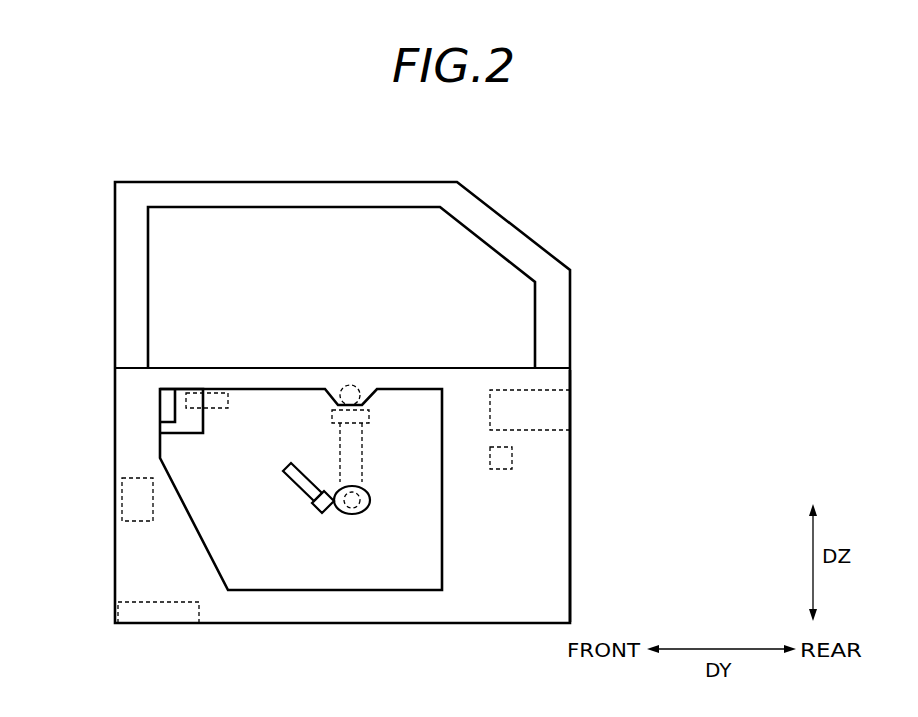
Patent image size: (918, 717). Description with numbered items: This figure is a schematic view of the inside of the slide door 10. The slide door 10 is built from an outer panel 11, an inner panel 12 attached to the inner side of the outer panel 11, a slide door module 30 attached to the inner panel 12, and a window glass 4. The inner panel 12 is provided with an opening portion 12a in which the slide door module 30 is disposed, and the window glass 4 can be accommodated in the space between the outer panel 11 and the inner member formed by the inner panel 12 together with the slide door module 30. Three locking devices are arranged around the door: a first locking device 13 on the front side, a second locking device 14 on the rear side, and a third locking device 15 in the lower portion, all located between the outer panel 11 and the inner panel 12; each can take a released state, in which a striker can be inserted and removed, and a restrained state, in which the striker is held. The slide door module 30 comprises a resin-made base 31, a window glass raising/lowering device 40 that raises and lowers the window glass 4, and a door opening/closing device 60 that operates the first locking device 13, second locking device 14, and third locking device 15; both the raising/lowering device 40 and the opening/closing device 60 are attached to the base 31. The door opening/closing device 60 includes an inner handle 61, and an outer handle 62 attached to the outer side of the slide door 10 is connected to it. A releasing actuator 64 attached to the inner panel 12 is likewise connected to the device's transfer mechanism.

The window glass 4 is at (467, 258).
The slide door 10 is at (690, 262).
The outer panel 11 is at (572, 331).
The inner panel 12 is at (558, 506).
The opening portion 12a is at (432, 566).
The first locking device 13 is at (122, 500).
The second locking device 14 is at (562, 404).
The third locking device 15 is at (158, 608).
The slide door module 30 is at (402, 388).
The base 31 is at (432, 531).
The window glass raising/lowering device 40 is at (365, 469).
The door opening/closing device 60 is at (150, 402).
The inner handle 61 is at (158, 415).
The outer handle 62 is at (215, 392).
The releasing actuator 64 is at (512, 458).